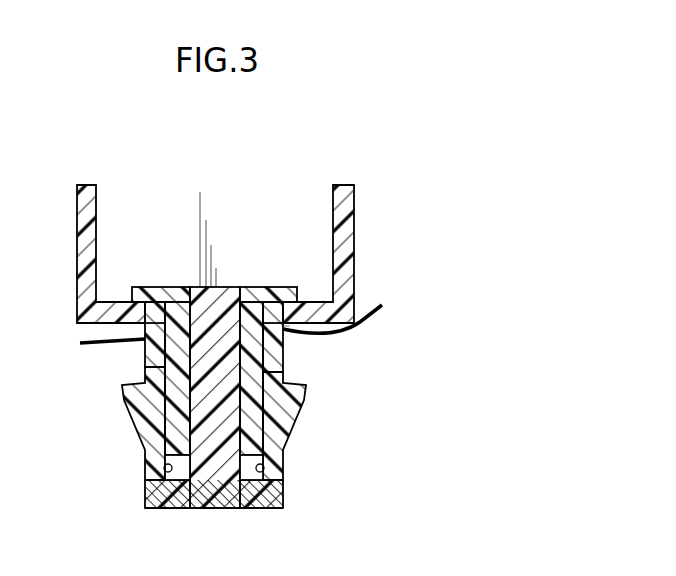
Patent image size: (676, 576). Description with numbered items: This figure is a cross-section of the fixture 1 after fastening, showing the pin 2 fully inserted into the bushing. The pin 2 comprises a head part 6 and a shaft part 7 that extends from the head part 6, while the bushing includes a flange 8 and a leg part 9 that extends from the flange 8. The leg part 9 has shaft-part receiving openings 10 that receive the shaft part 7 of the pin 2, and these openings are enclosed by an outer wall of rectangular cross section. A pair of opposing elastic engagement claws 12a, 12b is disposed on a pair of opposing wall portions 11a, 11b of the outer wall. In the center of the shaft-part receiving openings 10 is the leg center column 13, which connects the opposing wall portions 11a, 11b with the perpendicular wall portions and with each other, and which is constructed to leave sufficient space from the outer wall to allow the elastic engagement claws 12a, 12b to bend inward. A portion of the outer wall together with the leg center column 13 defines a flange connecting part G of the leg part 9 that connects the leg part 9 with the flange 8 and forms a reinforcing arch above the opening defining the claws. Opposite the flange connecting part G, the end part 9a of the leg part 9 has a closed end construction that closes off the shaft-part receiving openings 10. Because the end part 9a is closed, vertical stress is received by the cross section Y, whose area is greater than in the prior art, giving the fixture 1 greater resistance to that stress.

The fixture 1 is at (305, 150).
The pin 2 is at (239, 287).
The head part 6 is at (176, 288).
The shaft part 7 is at (183, 422).
The flange 8 is at (354, 206).
The leg part 9 is at (150, 481).
The end part 9a is at (213, 510).
The shaft-part receiving openings 10 is at (165, 466).
The opposing wall portion 11a is at (87, 348).
The opposing wall portion 11b is at (356, 314).
The elastic engagement claw 12a is at (123, 388).
The elastic engagement claw 12b is at (305, 392).
The leg center column 13 is at (160, 359).
The flange connecting part G is at (287, 333).
The cross section Y is at (258, 510).